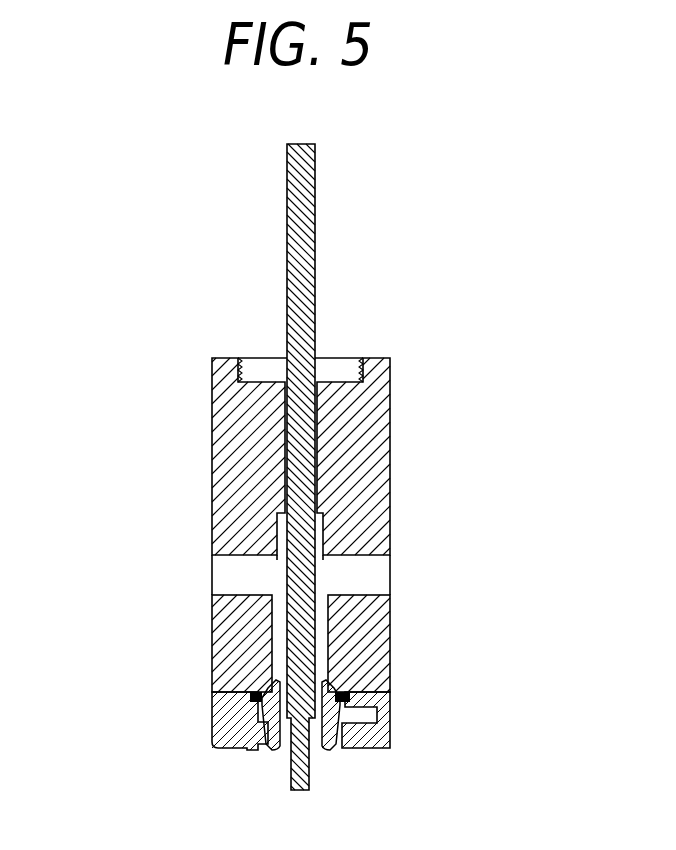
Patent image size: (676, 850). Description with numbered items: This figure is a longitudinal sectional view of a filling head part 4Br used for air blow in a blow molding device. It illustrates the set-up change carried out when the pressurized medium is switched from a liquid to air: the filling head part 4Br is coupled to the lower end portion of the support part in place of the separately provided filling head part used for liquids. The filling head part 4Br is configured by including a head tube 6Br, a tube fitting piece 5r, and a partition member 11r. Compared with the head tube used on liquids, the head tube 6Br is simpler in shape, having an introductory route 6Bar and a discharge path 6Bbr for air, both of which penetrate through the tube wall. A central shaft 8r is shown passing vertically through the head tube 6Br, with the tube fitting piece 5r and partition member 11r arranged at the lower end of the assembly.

The shaft 8r is at (316, 238).
The filling head part 4Br is at (300, 554).
The head tube 6Br is at (245, 428).
The introductory route 6Bar is at (219, 575).
The discharge path 6Bbr is at (380, 575).
The tube fitting piece 5r is at (345, 700).
The partition member 11r is at (225, 708).